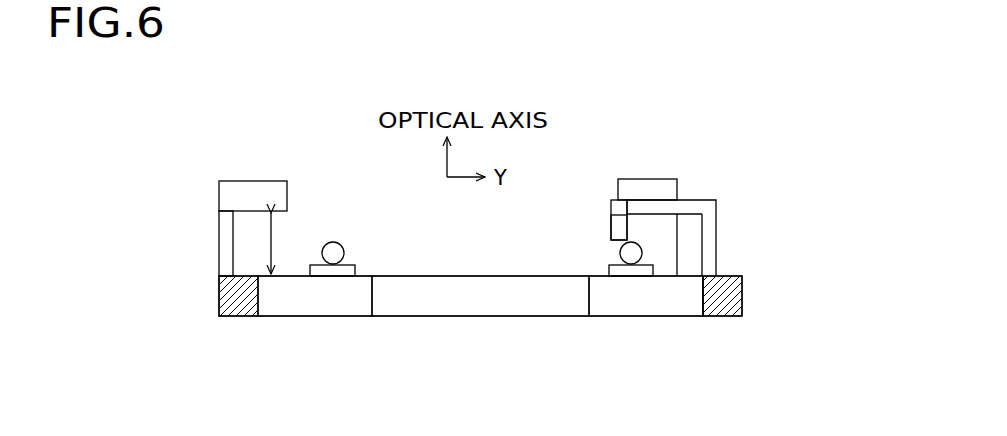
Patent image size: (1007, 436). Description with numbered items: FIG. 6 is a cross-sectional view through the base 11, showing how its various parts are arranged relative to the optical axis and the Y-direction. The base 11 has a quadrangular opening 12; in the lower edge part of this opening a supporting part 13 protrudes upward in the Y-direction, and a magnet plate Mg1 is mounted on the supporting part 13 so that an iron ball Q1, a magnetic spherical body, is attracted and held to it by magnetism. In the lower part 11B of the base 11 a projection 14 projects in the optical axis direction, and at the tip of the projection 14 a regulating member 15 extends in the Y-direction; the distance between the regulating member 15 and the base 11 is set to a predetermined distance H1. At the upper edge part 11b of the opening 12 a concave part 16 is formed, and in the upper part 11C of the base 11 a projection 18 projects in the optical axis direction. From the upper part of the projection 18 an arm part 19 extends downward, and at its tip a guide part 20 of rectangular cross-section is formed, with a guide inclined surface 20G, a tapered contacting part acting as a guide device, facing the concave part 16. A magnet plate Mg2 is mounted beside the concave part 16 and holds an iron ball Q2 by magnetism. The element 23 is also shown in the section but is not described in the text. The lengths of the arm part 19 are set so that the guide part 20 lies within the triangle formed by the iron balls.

The base 11 is at (216, 286).
The lower part of the base 11B is at (235, 317).
The upper part of the base 11C is at (743, 292).
The upper edge part of the opening 11b is at (587, 298).
The opening 12 is at (483, 298).
The supporting part 13 is at (320, 300).
The projection 14 is at (218, 237).
The regulating member 15 is at (236, 181).
The concave part 16 is at (697, 298).
The projection 18 is at (717, 232).
The arm part 19 is at (693, 200).
The guide part 20 is at (617, 200).
The guide inclined surface 20G is at (617, 227).
The top block 23 is at (660, 179).
The predetermined distance H1 is at (272, 240).
The iron ball Q1 is at (338, 242).
The iron ball Q2 is at (630, 256).
The magnet plate Mg1 is at (350, 265).
The magnet plate Mg2 is at (643, 272).